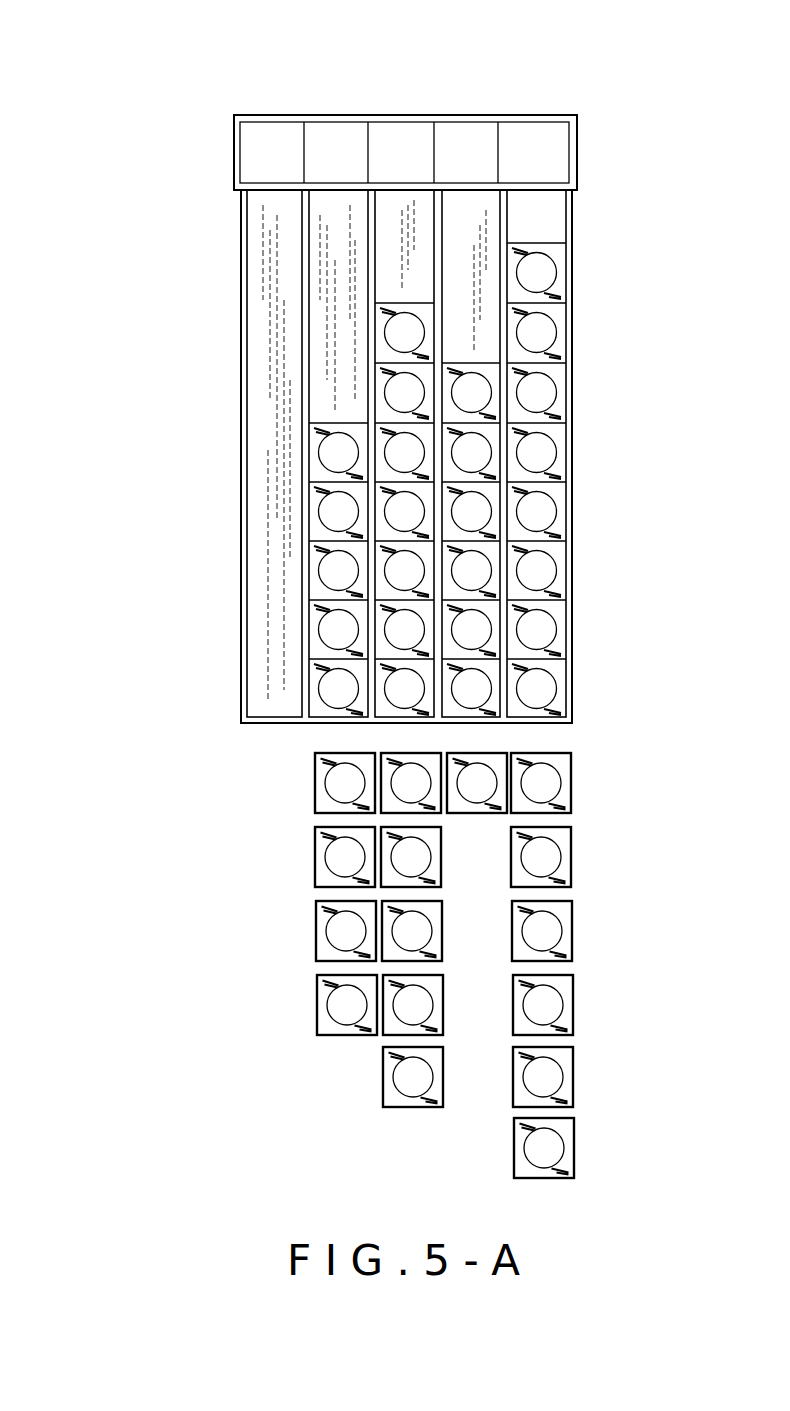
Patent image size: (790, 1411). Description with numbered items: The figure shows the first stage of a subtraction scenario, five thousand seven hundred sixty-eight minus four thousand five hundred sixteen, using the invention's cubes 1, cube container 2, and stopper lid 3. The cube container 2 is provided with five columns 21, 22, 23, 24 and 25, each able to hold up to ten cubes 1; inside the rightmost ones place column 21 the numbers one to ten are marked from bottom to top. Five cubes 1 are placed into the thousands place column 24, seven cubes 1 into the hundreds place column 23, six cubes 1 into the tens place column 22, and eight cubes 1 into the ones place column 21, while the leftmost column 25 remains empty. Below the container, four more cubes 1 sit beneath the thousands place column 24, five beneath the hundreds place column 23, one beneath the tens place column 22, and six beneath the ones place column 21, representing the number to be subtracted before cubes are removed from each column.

The cube 1 is at (445, 621).
The cube container 2 is at (212, 466).
The stopper lid 3 is at (419, 103).
The ones place column 21 is at (543, 389).
The tens place column 22 is at (486, 196).
The hundreds place column 23 is at (385, 198).
The thousands place column 24 is at (320, 198).
The column 25 is at (257, 198).